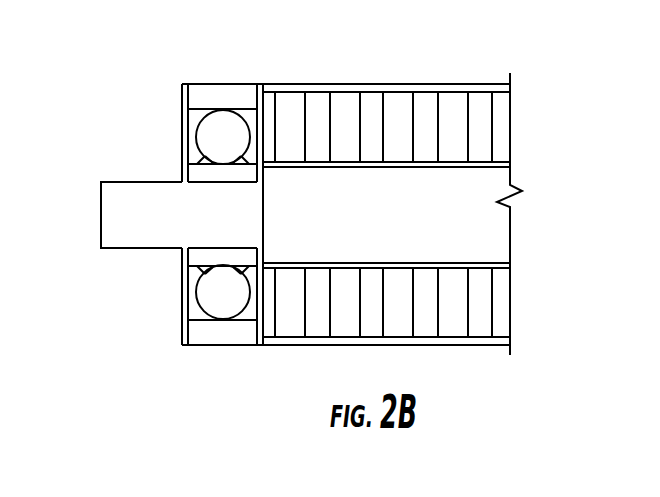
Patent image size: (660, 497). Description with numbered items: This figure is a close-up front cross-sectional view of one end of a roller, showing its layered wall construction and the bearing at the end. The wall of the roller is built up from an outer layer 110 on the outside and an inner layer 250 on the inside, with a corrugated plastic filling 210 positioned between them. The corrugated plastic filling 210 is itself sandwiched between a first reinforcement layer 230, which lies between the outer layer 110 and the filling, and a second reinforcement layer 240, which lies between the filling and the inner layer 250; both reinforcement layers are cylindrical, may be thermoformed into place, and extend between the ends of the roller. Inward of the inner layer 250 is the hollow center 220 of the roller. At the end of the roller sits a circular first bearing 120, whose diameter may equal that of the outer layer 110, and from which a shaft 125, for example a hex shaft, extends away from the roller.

The outer layer 110 is at (301, 82).
The first bearing 120 is at (187, 141).
The shaft 125 is at (100, 220).
The corrugated plastic filling 210 is at (460, 128).
The hollow center 220 is at (453, 242).
The first reinforcement layer 230 is at (495, 92).
The second reinforcement layer 240 is at (493, 160).
The inner layer 250 is at (453, 167).